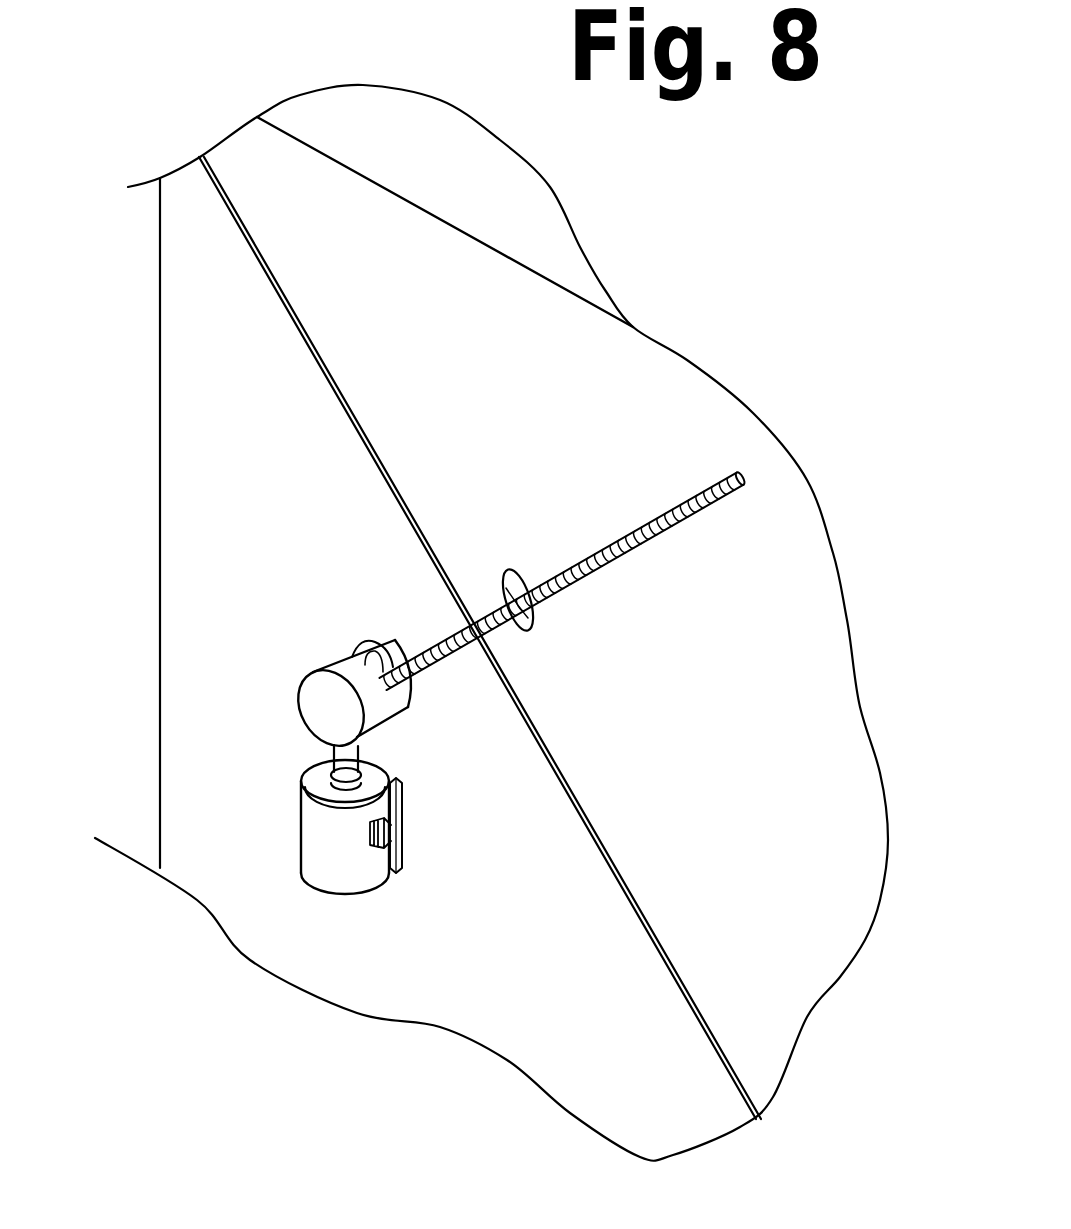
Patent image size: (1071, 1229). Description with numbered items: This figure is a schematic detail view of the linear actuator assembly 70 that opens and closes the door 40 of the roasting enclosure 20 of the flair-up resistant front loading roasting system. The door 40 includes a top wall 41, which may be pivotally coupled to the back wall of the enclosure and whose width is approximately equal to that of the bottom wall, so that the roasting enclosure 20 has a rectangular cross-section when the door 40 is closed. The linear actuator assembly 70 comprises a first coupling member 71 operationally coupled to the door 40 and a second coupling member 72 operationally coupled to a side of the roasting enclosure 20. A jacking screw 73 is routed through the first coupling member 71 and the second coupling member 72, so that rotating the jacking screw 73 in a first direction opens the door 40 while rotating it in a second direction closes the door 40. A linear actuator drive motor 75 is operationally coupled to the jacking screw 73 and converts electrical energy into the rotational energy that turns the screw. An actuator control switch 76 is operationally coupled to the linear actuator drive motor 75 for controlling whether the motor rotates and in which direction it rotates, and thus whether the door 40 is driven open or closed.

The roasting enclosure 20 is at (285, 567).
The door 40 is at (780, 813).
The top wall 41 is at (470, 177).
The linear actuator assembly 70 is at (230, 778).
The first coupling member 71 is at (325, 700).
The second coupling member 72 is at (493, 593).
The jacking screw 73 is at (673, 493).
The linear actuator drive motor 75 is at (315, 837).
The actuator control switch 76 is at (395, 870).